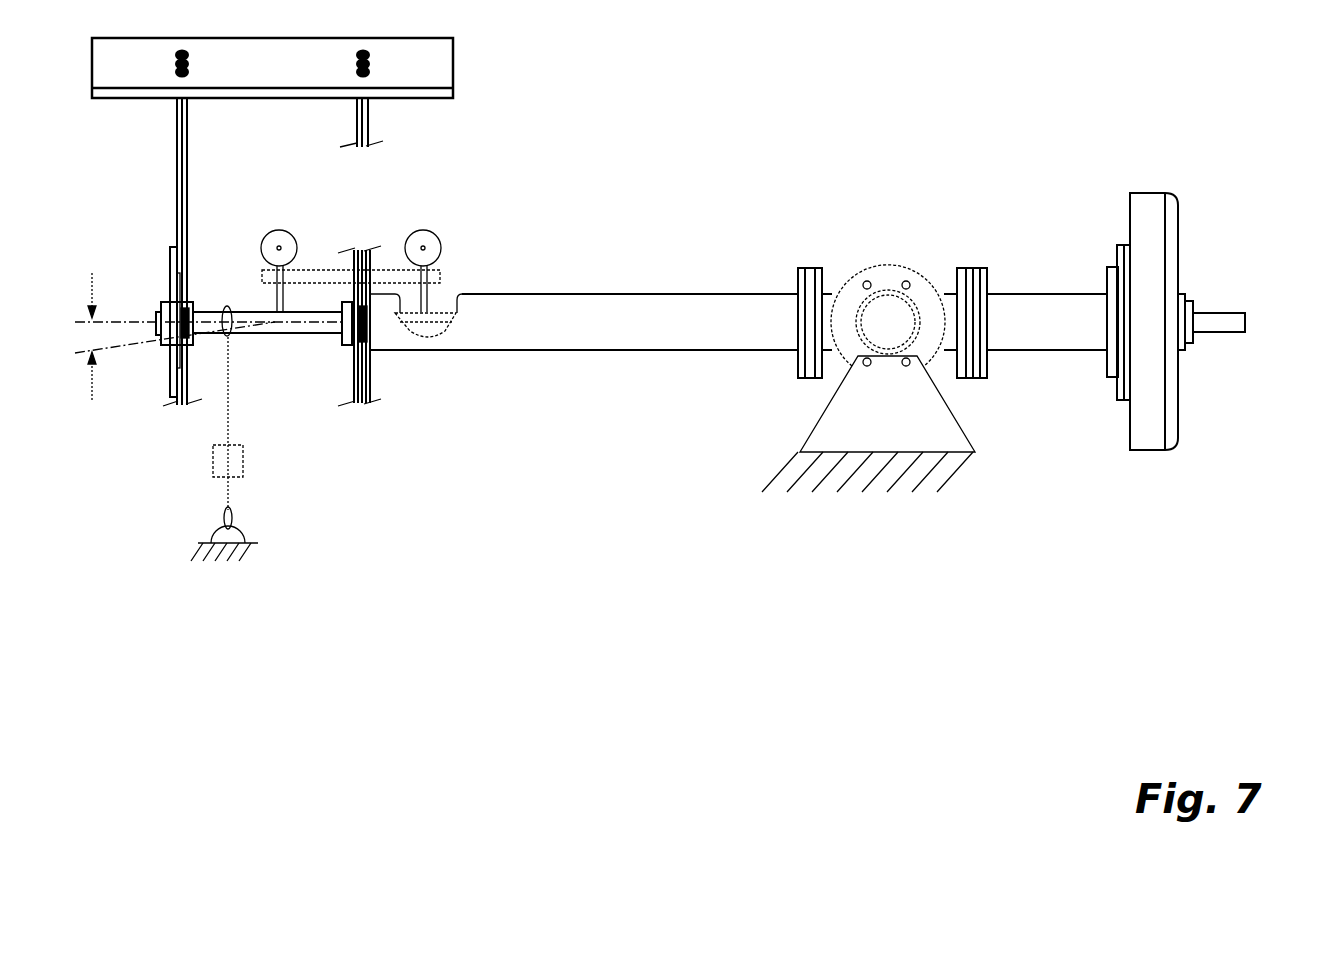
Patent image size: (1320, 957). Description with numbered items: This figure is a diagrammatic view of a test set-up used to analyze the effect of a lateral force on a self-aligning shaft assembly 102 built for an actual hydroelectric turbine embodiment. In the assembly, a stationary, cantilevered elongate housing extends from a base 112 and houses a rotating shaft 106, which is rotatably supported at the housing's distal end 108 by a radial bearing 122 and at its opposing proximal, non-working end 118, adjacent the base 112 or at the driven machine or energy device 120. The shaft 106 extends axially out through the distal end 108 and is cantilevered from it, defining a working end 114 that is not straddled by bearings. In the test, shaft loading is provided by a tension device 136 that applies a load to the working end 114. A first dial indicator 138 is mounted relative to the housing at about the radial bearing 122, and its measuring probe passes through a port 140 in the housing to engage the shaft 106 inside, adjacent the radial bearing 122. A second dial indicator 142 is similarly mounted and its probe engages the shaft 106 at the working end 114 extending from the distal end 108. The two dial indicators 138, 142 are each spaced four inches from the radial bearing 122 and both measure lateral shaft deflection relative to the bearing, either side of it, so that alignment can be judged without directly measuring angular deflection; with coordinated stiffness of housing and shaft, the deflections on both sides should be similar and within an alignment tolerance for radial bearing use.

The self-aligning shaft assembly 102 is at (688, 350).
The rotating shaft 106 is at (257, 322).
The distal end 108 is at (371, 323).
The base 112 is at (932, 417).
The working end 114 is at (172, 345).
The proximal, non-working end 118 is at (1004, 313).
The driven machine or energy device 120 is at (1148, 198).
The radial bearing 122 is at (368, 345).
The tension device 136 is at (243, 345).
The first dial indicator 138 is at (427, 232).
The port 140 is at (444, 296).
The second dial indicator 142 is at (268, 232).